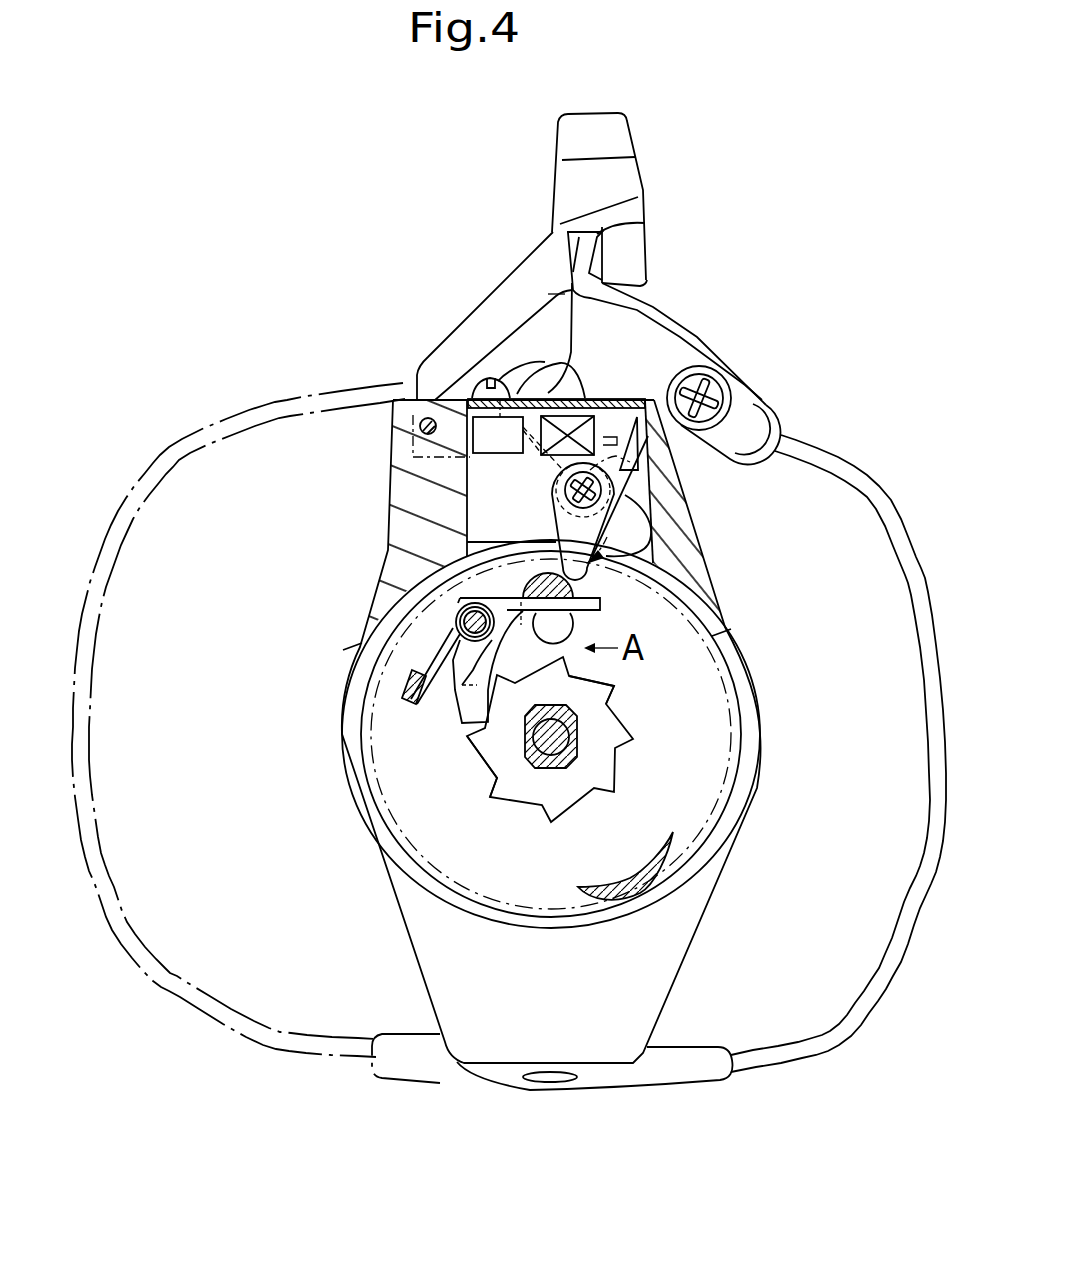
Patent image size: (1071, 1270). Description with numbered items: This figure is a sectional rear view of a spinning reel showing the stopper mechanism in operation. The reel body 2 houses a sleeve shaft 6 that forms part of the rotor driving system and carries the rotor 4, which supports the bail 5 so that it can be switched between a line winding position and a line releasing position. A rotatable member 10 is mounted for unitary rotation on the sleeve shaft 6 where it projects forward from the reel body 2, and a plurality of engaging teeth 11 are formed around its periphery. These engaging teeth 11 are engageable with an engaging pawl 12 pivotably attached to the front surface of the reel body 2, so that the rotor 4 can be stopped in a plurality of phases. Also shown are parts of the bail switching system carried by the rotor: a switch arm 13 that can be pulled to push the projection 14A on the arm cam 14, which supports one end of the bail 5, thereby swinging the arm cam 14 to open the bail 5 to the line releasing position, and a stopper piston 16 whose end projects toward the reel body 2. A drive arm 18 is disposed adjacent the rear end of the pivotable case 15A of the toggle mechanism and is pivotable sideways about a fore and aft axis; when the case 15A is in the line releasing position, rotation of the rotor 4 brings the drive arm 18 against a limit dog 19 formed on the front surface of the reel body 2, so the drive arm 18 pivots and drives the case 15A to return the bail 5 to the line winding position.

The reel body 2 is at (700, 850).
The rotor 4 is at (696, 934).
The bail 5 is at (292, 1050).
The sleeve shaft 6 is at (603, 784).
The rotatable member 10 is at (612, 741).
The engaging teeth 11 is at (615, 705).
The engaging pawl 12 is at (466, 727).
The switch arm 13 is at (585, 125).
The arm cam 14 is at (686, 350).
The projection 14A is at (645, 223).
The case 15A is at (560, 398).
The stopper piston 16 is at (420, 430).
The drive arm 18 is at (634, 513).
The limit dog 19 is at (586, 885).